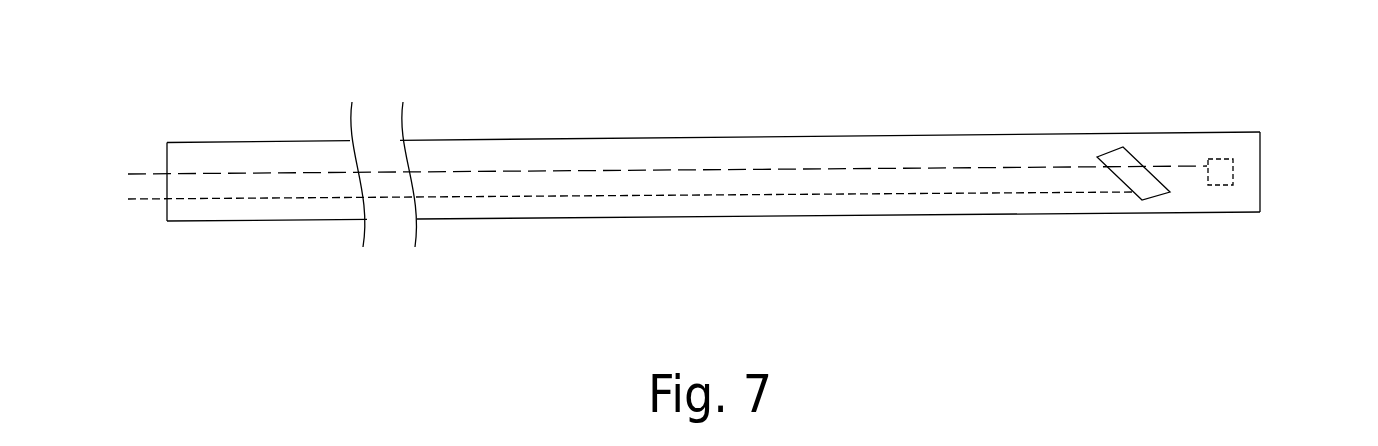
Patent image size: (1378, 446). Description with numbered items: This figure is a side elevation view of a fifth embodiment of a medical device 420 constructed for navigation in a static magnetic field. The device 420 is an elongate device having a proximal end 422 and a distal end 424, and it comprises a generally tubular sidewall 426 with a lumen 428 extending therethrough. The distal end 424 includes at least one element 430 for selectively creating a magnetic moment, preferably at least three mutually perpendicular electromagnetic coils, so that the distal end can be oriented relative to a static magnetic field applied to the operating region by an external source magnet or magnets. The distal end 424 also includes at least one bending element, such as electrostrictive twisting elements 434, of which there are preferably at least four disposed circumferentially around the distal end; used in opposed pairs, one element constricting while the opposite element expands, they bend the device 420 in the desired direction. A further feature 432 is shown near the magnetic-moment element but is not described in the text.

The medical device 420 is at (767, 260).
The proximal end 422 is at (149, 212).
The distal end 424 is at (1270, 136).
The tubular sidewall 426 is at (762, 150).
The lumen 428 is at (913, 190).
The element for selectively creating a magnetic moment 430 is at (1222, 177).
The optical fiber 432 is at (958, 168).
The electrostrictive twisting elements 434 is at (1125, 167).